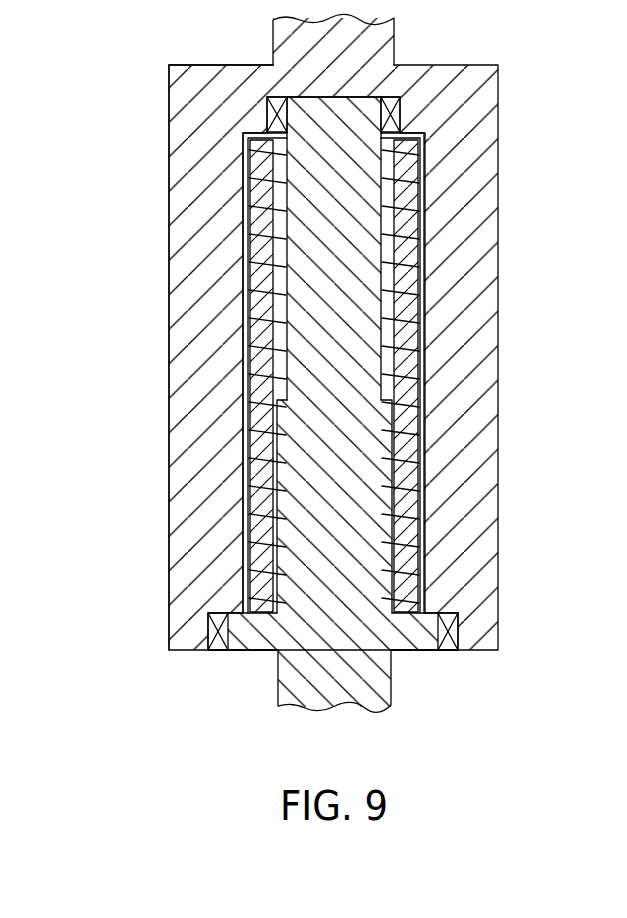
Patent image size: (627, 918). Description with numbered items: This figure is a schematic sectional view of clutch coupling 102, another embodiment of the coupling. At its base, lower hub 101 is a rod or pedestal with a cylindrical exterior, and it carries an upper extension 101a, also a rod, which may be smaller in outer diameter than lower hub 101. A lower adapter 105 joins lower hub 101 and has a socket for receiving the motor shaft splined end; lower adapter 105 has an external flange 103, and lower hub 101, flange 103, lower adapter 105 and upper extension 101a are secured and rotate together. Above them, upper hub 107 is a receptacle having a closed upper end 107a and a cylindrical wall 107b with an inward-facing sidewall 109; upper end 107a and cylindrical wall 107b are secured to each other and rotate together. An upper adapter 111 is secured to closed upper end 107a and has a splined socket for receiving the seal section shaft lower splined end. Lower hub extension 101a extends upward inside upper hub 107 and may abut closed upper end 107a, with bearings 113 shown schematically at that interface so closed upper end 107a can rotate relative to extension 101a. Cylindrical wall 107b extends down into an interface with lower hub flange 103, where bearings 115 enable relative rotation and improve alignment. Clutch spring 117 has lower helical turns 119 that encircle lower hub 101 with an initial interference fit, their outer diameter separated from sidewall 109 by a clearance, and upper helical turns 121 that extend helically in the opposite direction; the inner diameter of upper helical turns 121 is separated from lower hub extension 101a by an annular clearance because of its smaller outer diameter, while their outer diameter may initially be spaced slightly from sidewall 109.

The lower hub 101 is at (368, 498).
The upper extension 101a is at (360, 212).
The clutch coupling 102 is at (116, 501).
The external flange 103 is at (405, 652).
The lower adapter 105 is at (278, 688).
The upper hub 107 is at (503, 128).
The closed upper end 107a is at (232, 65).
The cylindrical wall 107b is at (169, 242).
The inward-facing sidewall 109 is at (405, 246).
The upper adapter 111 is at (396, 45).
The bearings 113 is at (275, 115).
The bearings 115 is at (455, 630).
The clutch spring 117 is at (412, 378).
The lower helical turns 119 is at (410, 522).
The upper helical turns 121 is at (263, 180).